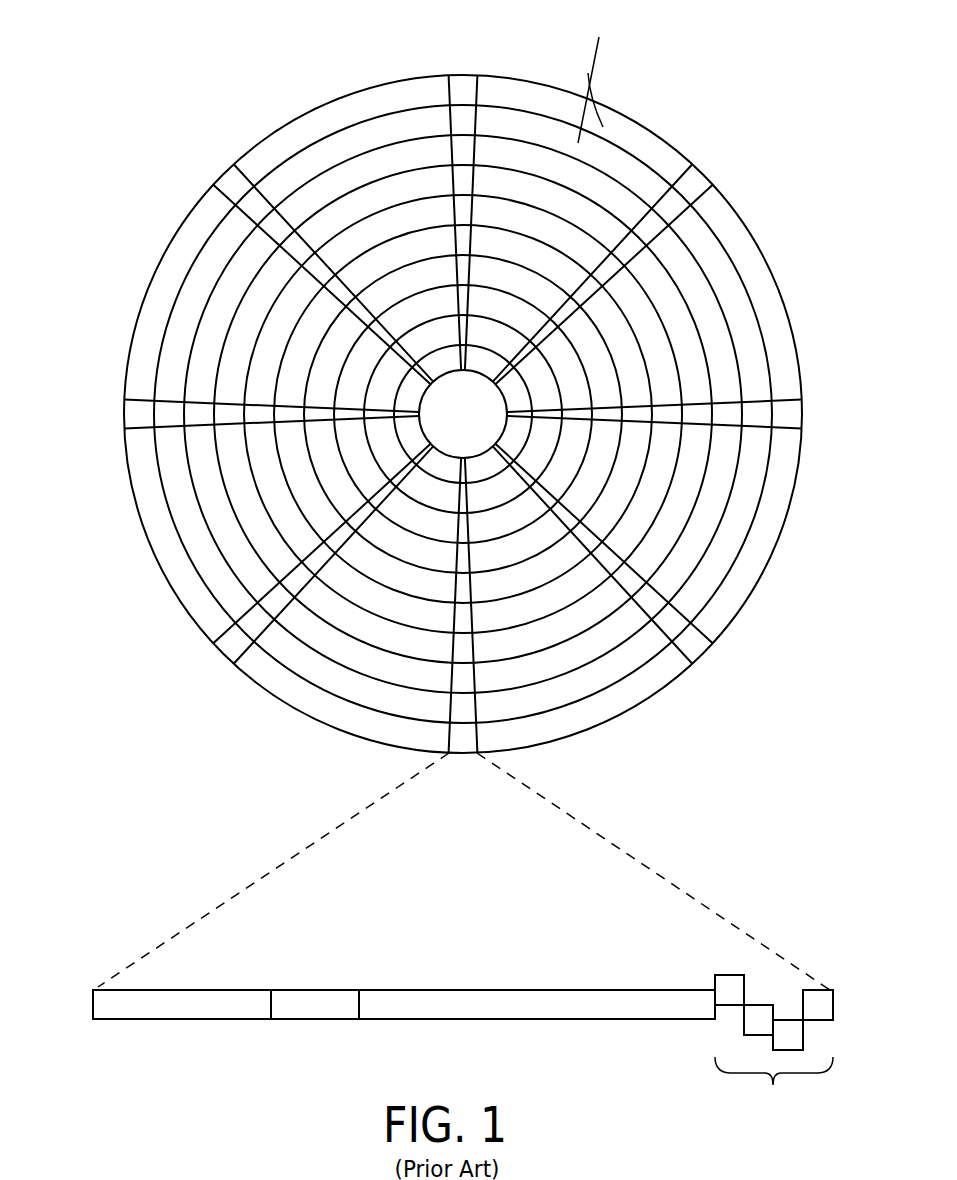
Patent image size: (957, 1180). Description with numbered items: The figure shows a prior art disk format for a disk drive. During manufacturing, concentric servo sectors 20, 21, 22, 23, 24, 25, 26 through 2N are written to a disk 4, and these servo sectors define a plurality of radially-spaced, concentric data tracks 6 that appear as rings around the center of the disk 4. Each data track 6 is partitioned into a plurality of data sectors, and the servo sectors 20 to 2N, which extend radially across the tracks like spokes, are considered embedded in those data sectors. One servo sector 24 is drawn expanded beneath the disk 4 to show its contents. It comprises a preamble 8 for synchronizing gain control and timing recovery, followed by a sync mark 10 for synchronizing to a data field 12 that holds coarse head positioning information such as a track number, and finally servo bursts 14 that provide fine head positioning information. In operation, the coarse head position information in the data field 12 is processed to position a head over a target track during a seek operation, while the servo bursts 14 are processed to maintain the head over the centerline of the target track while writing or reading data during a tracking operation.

The disk 4 is at (208, 77).
The data track 6 is at (594, 80).
The servo sector 20 is at (464, 85).
The servo sector 21 is at (694, 182).
The servo sector 22 is at (804, 416).
The servo sector 23 is at (695, 648).
The servo sector 24 is at (312, 830).
The servo sector 25 is at (227, 651).
The servo sector 26 is at (133, 412).
The servo sector 2N is at (230, 182).
The preamble 8 is at (160, 1016).
The sync mark 10 is at (311, 1016).
The data field 12 is at (525, 1016).
The servo bursts 14 is at (696, 953).